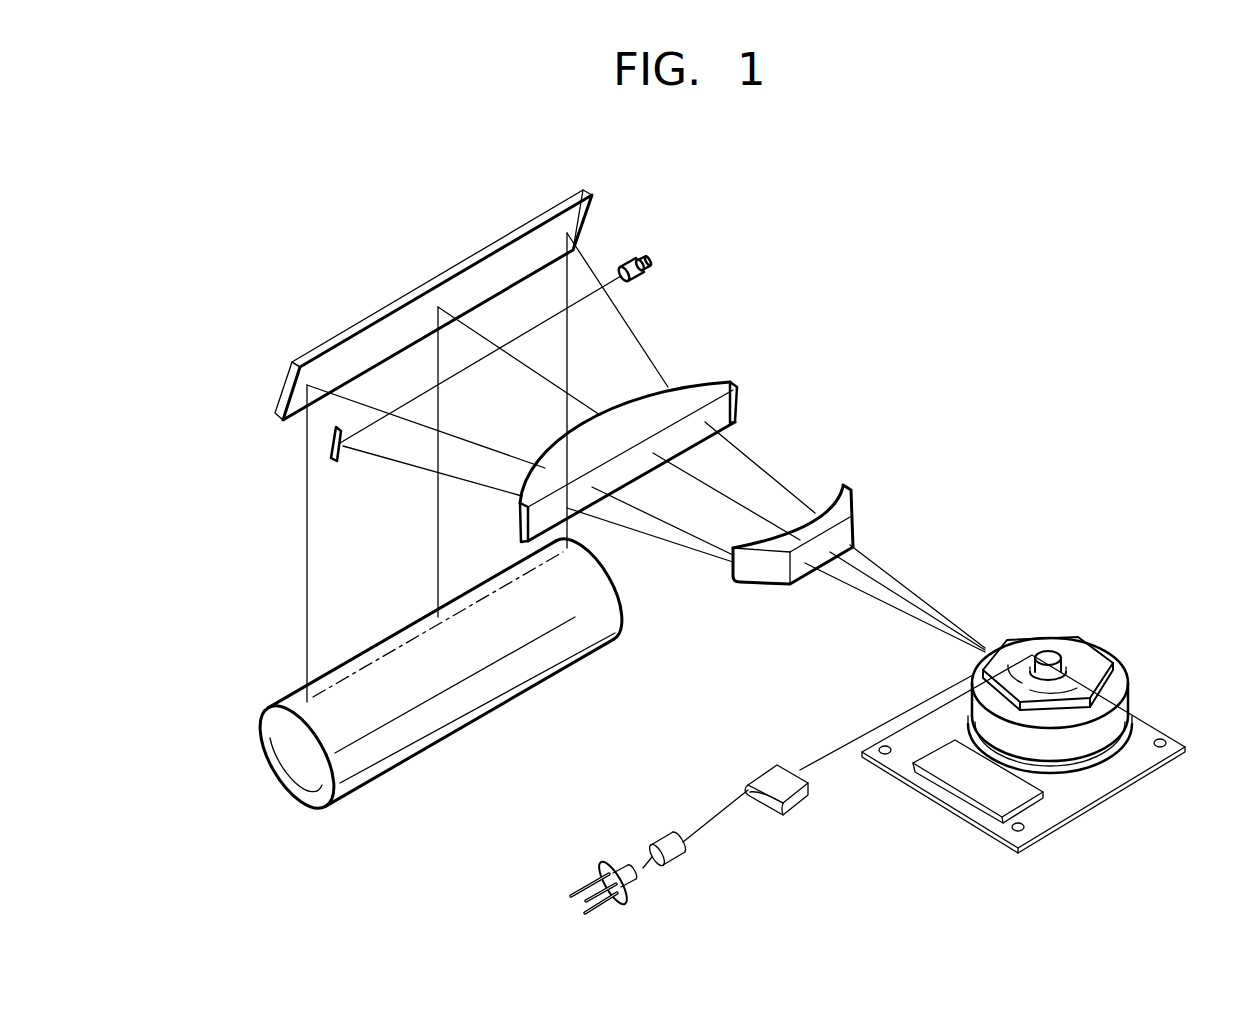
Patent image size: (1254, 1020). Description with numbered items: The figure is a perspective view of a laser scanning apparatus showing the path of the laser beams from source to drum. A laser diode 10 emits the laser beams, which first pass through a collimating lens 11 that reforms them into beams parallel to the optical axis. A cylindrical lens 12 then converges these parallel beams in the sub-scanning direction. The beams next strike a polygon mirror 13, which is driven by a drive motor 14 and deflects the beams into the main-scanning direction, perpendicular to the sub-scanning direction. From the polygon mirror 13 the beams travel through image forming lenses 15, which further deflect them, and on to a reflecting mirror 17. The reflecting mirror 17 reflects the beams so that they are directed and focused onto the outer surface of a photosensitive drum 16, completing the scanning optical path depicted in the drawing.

The laser diode 10 is at (597, 870).
The collimating lens 11 is at (670, 860).
The cylindrical lens 12 is at (793, 805).
The polygon mirror 13 is at (1078, 652).
The drive motor 14 is at (1095, 725).
The image forming lenses 15 is at (725, 405).
The photosensitive drum 16 is at (398, 740).
The reflecting mirror 17 is at (448, 275).